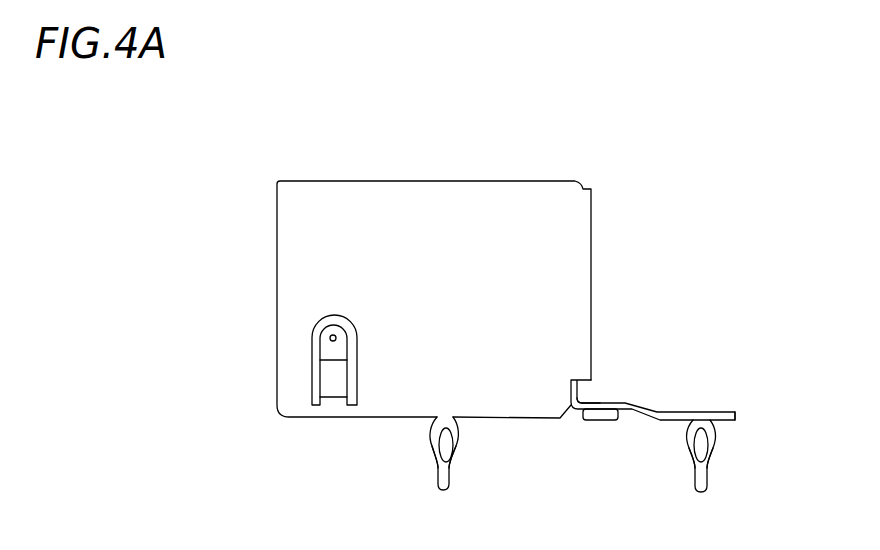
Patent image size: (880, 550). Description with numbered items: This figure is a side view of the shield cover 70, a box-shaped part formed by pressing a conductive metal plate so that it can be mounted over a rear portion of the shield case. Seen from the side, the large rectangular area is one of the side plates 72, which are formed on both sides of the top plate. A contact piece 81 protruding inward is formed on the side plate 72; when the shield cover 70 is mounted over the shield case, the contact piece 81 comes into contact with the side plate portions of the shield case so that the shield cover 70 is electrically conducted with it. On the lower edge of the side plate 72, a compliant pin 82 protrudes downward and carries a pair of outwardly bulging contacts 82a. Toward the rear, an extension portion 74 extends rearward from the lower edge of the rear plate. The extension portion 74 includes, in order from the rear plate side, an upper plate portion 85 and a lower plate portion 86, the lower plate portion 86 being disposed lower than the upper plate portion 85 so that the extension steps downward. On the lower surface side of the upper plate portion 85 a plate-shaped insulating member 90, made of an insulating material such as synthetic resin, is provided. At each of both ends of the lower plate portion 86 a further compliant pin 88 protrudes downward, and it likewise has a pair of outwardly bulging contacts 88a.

The shield cover 70 is at (560, 166).
The side plate 72 is at (406, 213).
The extension portion 74 is at (652, 403).
The contact piece 81 is at (320, 348).
The compliant pin 82 is at (430, 458).
The outwardly bulging contacts 82a is at (432, 440).
The upper plate portion 85 is at (605, 403).
The lower plate portion 86 is at (723, 408).
The compliant pin 88 is at (709, 469).
The outwardly bulging contacts 88a is at (688, 443).
The insulating member 90 is at (596, 422).